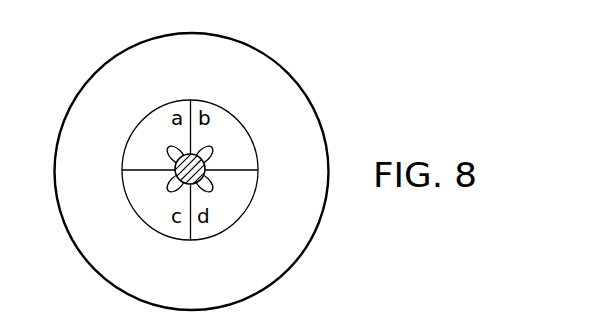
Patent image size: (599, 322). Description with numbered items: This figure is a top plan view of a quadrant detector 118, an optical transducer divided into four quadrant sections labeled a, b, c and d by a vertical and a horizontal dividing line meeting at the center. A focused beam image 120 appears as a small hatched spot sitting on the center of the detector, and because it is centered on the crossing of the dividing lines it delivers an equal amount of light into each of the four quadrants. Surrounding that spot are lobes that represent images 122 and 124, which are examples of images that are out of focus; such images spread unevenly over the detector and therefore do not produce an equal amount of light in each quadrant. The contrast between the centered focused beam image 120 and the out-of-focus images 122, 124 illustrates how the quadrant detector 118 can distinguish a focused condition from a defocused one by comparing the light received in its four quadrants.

The quadrant detector 118 is at (298, 80).
The focused beam image 120 is at (206, 171).
The out-of-focus image 122 is at (172, 150).
The out-of-focus image 124 is at (170, 192).